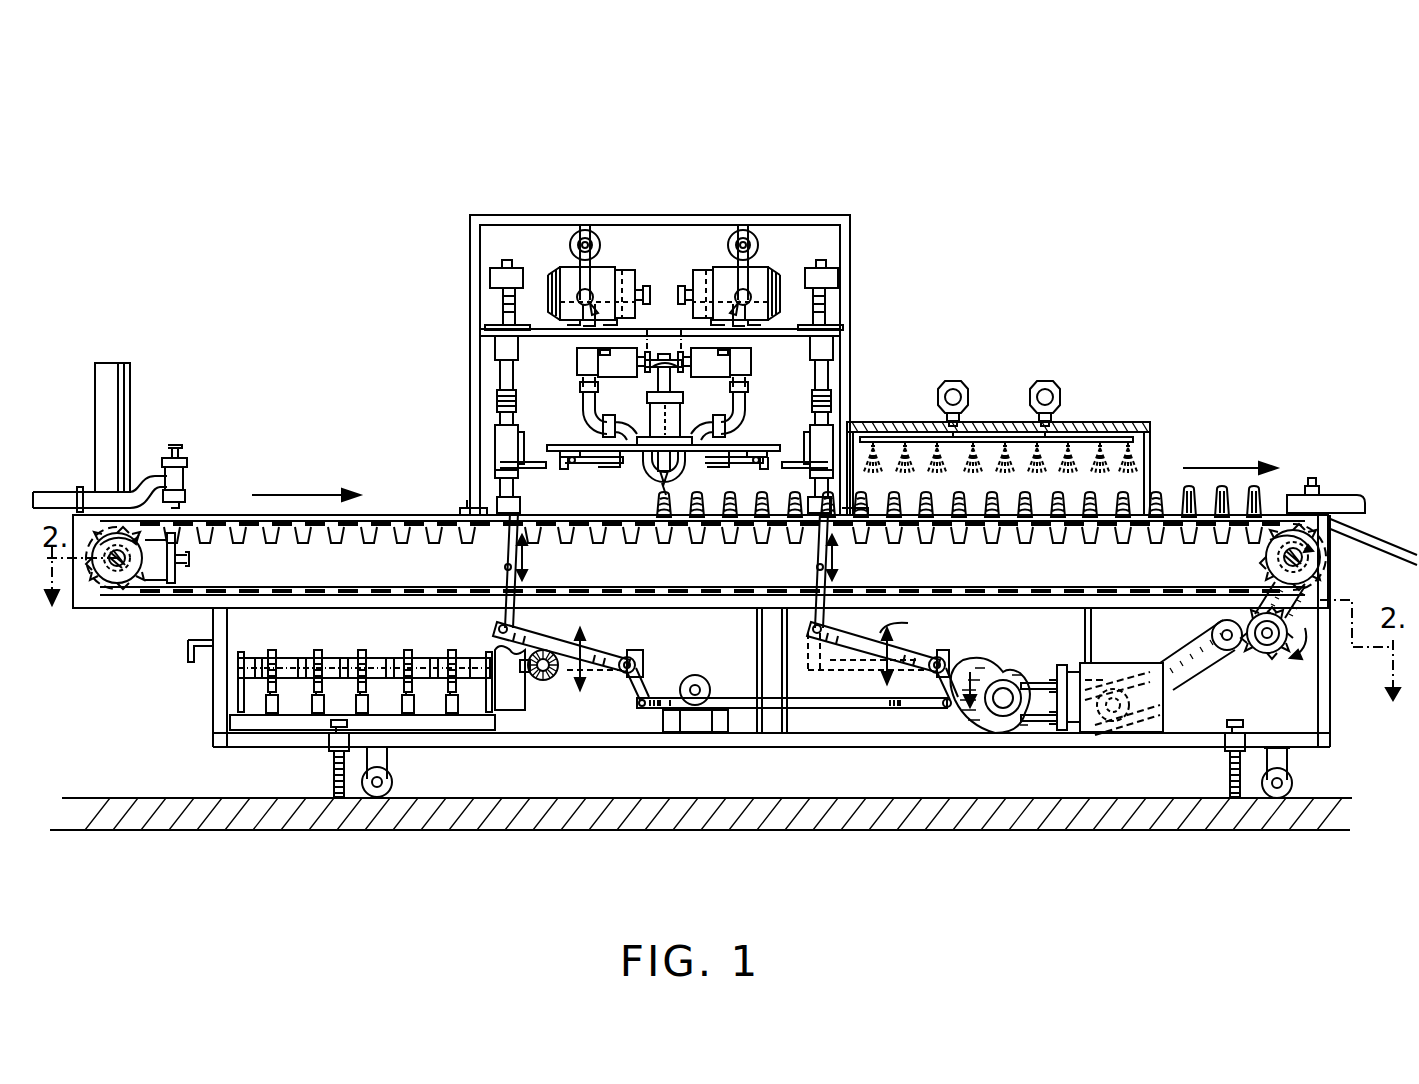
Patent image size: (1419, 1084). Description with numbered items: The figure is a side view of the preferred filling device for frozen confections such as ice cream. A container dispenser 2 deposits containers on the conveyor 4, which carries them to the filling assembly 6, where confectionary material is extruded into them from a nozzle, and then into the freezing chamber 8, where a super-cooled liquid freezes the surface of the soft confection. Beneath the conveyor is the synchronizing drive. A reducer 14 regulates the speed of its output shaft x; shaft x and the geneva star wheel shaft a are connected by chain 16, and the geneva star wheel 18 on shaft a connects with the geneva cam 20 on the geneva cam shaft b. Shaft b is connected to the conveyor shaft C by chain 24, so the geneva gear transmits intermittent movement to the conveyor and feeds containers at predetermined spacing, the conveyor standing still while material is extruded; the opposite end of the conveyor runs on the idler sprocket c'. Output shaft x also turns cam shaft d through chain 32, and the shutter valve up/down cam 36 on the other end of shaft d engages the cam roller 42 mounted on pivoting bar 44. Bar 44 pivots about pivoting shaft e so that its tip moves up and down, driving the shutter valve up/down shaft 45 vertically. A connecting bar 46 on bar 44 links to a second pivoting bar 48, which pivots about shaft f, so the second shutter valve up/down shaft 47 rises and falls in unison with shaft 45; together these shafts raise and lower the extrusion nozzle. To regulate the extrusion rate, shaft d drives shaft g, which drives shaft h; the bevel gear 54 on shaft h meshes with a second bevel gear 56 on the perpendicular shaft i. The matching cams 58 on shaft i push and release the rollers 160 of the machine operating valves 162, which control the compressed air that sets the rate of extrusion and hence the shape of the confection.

The container dispenser 2 is at (154, 443).
The conveyor 4 is at (220, 510).
The filling assembly 6 is at (662, 210).
The freezing chamber 8 is at (1003, 402).
The reducer 14 is at (1147, 724).
The chain 16 is at (1178, 689).
The geneva star wheel 18 is at (1230, 640).
The geneva cam 20 is at (1291, 650).
The chain 24 is at (1310, 600).
The chain 32 is at (1033, 718).
The shutter valve up/down cam 36 is at (984, 666).
The cam roller 42 is at (947, 706).
The pivoting bar 44 is at (890, 635).
The shutter valve up/down shaft 45 is at (813, 555).
The connecting bar 46 is at (815, 708).
The shutter valve up/down shaft 47 is at (503, 555).
The second pivoting bar 48 is at (602, 646).
The bevel gear 54 is at (560, 686).
The second bevel gear 56 is at (533, 684).
The matching cams 58 is at (365, 696).
The rollers 160 is at (260, 692).
The machine operating valves 162 is at (322, 696).
The conveyor shaft C is at (1293, 557).
The conveyor idler sprocket c' is at (115, 592).
The geneva star wheel shaft a is at (1240, 663).
The geneva cam shaft b is at (1277, 660).
The cam shaft d is at (1003, 700).
The pivoting shaft e is at (937, 668).
The shaft f is at (627, 680).
The shaft g is at (693, 700).
The shaft h is at (540, 680).
The shaft i is at (515, 678).
The output shaft x is at (1118, 712).